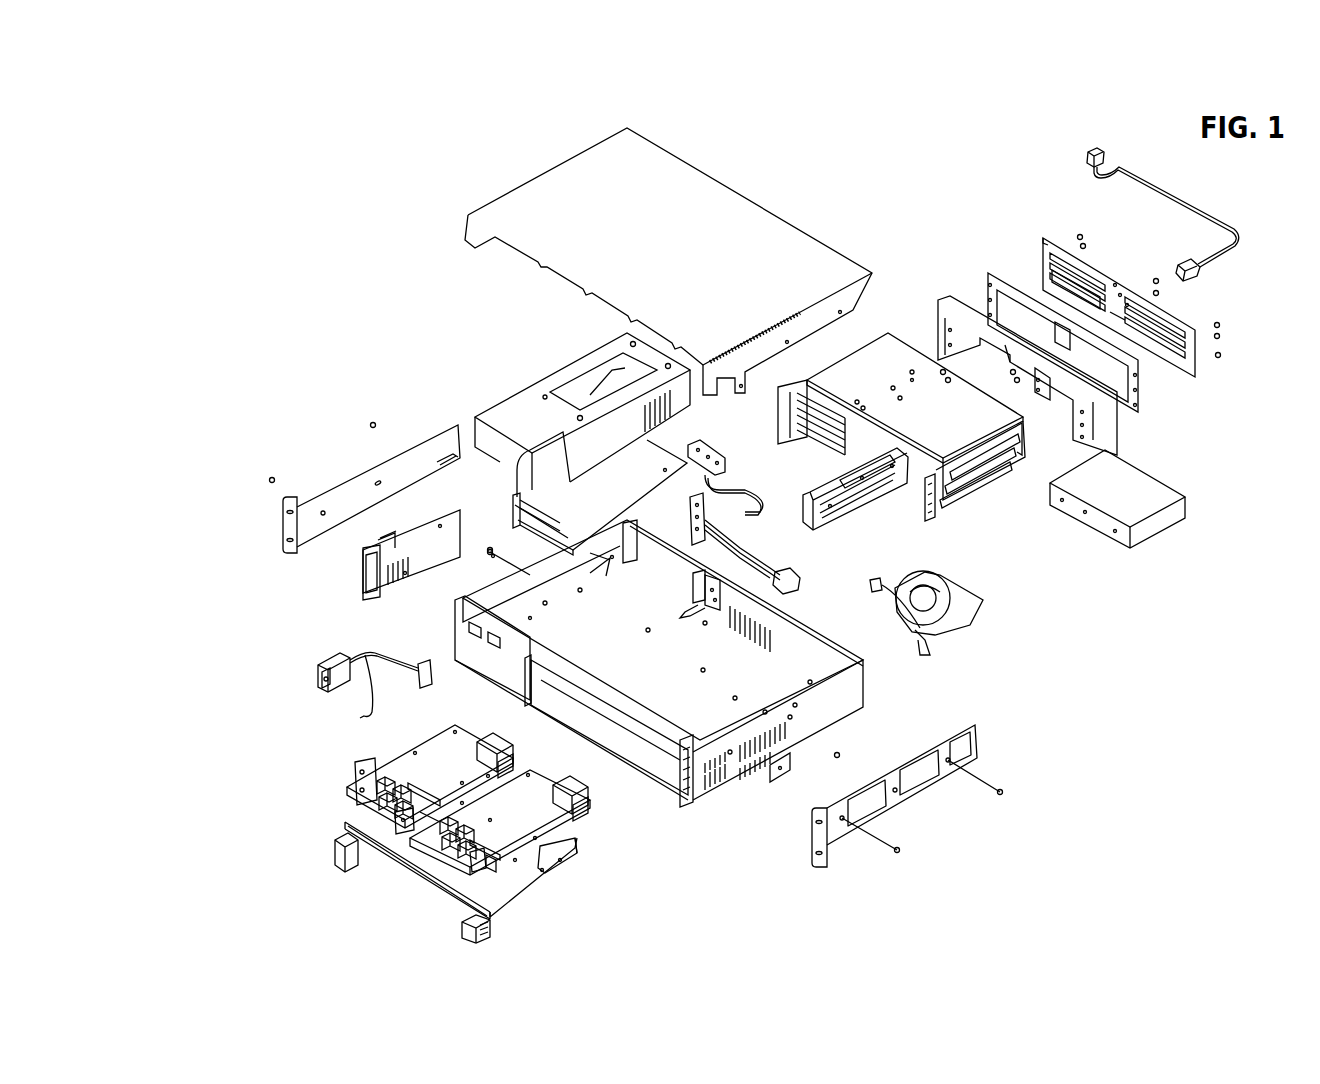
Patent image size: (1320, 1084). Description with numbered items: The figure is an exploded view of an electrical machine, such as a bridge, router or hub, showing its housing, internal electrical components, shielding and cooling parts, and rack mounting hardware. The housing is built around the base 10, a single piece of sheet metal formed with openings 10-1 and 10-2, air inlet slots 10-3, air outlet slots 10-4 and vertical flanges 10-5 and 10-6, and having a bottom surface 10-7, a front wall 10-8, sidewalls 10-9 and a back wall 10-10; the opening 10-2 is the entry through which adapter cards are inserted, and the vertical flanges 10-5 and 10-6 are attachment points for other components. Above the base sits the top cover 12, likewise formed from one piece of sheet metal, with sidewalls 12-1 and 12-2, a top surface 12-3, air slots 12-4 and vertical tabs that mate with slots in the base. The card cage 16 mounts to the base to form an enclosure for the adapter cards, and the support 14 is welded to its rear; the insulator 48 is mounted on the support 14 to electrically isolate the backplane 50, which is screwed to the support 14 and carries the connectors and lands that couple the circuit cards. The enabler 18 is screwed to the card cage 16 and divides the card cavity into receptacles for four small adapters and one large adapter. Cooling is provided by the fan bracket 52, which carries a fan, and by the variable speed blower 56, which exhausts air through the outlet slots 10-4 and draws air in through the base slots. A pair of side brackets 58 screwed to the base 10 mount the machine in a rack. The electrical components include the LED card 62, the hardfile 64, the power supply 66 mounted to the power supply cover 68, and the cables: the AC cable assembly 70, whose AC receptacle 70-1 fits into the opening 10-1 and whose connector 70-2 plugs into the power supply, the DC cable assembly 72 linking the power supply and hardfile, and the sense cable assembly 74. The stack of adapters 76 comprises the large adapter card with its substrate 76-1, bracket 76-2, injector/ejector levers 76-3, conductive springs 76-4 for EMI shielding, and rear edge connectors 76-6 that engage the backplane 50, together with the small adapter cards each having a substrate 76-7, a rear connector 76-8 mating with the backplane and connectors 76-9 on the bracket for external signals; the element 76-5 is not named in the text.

The base 10 is at (668, 700).
The opening 10-1 is at (468, 632).
The opening 10-2 is at (549, 696).
The air inlet slots 10-3 is at (714, 802).
The air outlet (exhaust) slots 10-4 is at (722, 596).
The vertical flange 10-5 is at (688, 803).
The vertical flange 10-6 is at (524, 700).
The bottom surface 10-7 is at (671, 651).
The front wall 10-8 is at (492, 648).
The sidewalls 10-9 is at (837, 755).
The back wall 10-10 is at (866, 680).
The top cover 12 is at (553, 261).
The sidewall 12-1 is at (480, 245).
The sidewall 12-2 is at (798, 350).
The top surface 12-3 is at (668, 251).
The air slots 12-4 is at (789, 306).
The support 14 is at (936, 294).
The card cage 16 is at (992, 496).
The enabler 18 is at (885, 505).
The insulator 48 is at (984, 268).
The backplane 50 is at (1038, 232).
The fan bracket 52 is at (380, 598).
The variable speed blower 56 is at (977, 624).
The side brackets 58 is at (368, 468).
The LED card 62 is at (792, 760).
The hardfile 64 is at (1094, 530).
The power supply 66 is at (515, 487).
The power supply cover 68 is at (530, 380).
The AC cable assembly 70 is at (338, 703).
The AC receptacle 70-1 is at (330, 655).
The connector 70-2 is at (433, 662).
The DC cable assembly 72 is at (795, 592).
The sense cable assembly 74 is at (1085, 160).
The stack of adapters 76 is at (412, 837).
The substrate 76-1 is at (515, 912).
The bracket 76-2 is at (442, 888).
The injector/ejector levers 76-3 is at (345, 852).
The conductive springs 76-4 is at (342, 818).
The 3U adapter 76-5 is at (355, 764).
The connectors 76-6 is at (528, 944).
The substrate 76-7 is at (494, 834).
The connector 76-8 is at (551, 777).
The connectors 76-9 is at (347, 820).